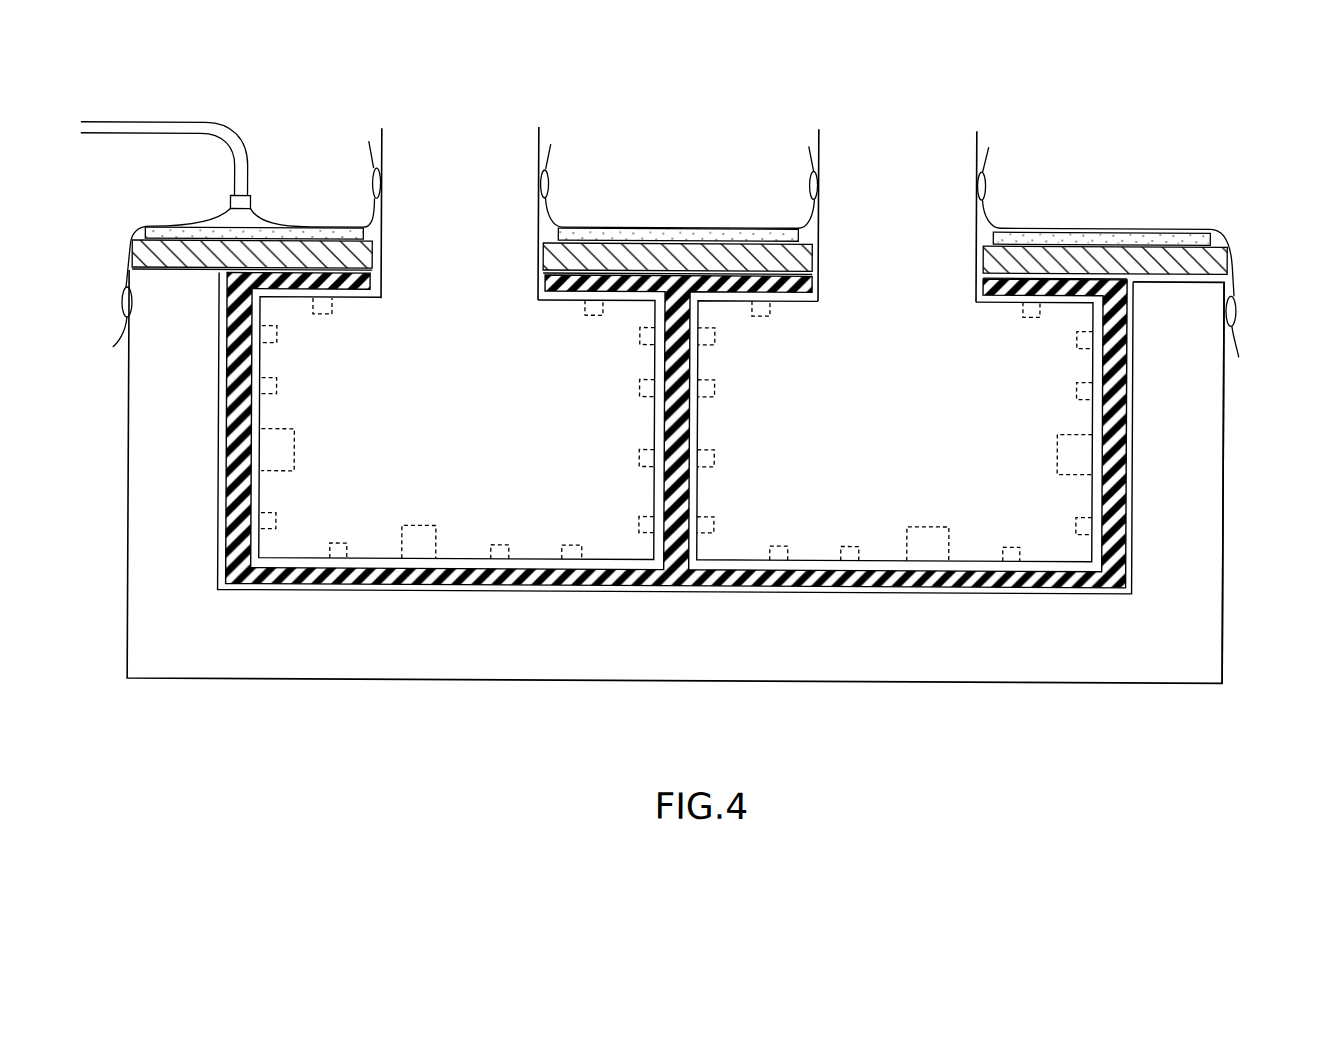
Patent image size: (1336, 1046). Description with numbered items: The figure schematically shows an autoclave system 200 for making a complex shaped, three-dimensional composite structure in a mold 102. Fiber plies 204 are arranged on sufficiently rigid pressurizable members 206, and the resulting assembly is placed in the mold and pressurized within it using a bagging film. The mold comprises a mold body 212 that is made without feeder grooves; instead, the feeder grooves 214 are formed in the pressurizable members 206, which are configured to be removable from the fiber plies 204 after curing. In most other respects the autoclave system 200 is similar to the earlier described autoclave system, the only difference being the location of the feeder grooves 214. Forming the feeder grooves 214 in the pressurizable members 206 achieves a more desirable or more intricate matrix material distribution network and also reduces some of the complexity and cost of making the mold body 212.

The mold 102 is at (1238, 645).
The autoclave system 200 is at (1162, 88).
The fiber plies 204 is at (1128, 487).
The pressurizable members 206 is at (1092, 415).
The mold body 212 is at (1223, 543).
The feeder grooves 214 is at (925, 543).